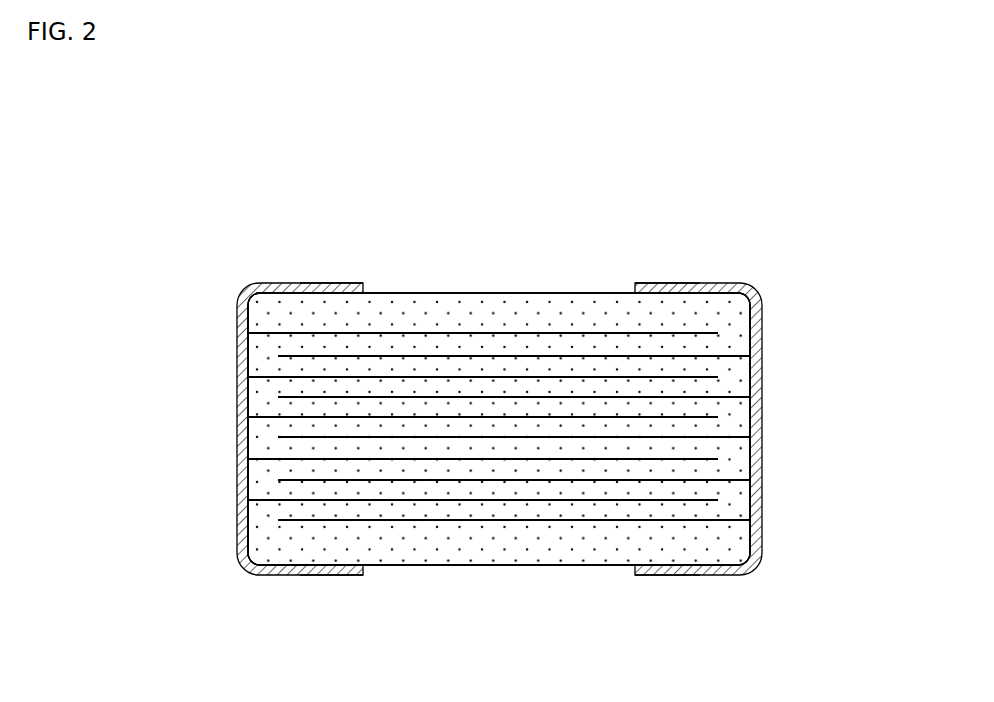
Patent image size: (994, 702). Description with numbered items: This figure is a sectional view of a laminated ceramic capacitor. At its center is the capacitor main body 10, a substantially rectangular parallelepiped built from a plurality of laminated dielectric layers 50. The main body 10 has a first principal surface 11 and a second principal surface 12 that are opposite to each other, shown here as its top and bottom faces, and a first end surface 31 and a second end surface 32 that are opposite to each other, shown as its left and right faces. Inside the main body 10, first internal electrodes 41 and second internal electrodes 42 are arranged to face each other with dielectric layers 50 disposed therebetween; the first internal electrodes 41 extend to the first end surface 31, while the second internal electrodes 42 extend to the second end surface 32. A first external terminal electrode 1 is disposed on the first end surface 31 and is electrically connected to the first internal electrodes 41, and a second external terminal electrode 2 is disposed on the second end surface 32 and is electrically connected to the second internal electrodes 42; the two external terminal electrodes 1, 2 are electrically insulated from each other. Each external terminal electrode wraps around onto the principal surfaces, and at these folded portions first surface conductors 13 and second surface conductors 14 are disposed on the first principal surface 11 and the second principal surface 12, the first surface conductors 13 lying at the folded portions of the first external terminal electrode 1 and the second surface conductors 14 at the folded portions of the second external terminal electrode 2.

The first external terminal electrode 1 is at (307, 282).
The second external terminal electrode 2 is at (697, 283).
The capacitor main body 10 is at (586, 286).
The first principal surface 11 is at (490, 292).
The second principal surface 12 is at (480, 568).
The first surface conductors 13 is at (322, 283).
The second surface conductors 14 is at (675, 287).
The first end surface 31 is at (243, 483).
The second end surface 32 is at (760, 498).
The first internal electrodes 41 is at (270, 417).
The second internal electrodes 42 is at (717, 437).
The dielectric layers 50 is at (325, 432).